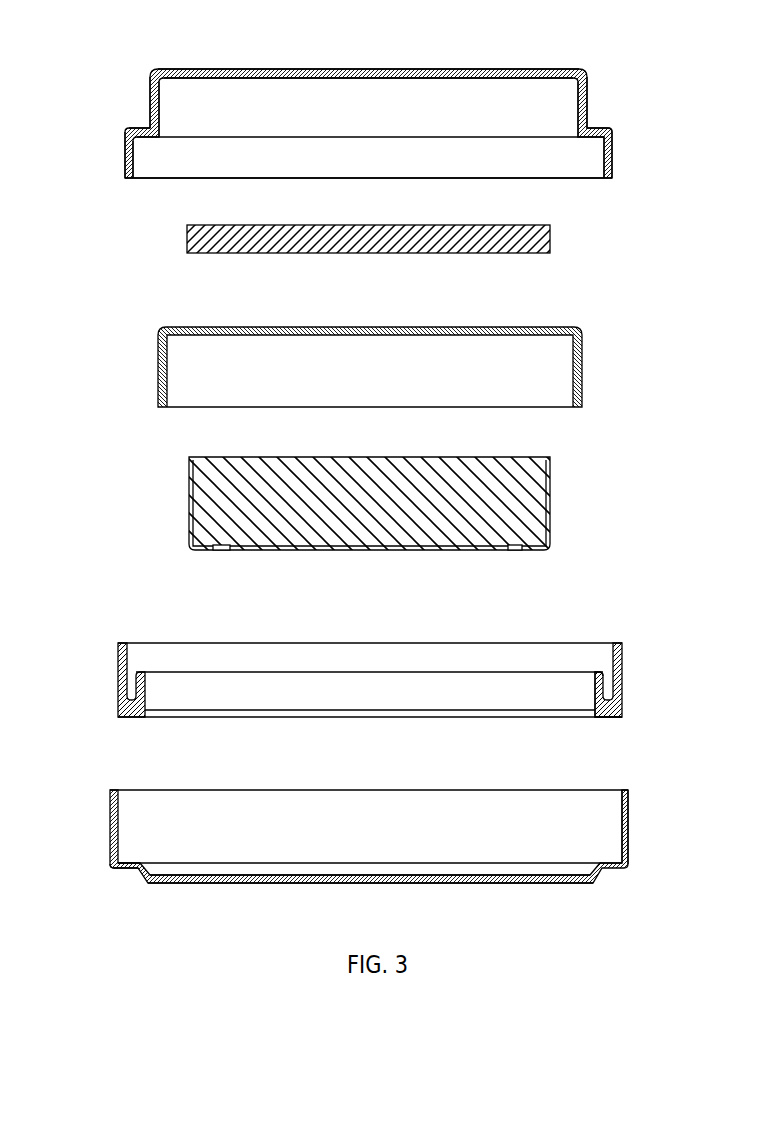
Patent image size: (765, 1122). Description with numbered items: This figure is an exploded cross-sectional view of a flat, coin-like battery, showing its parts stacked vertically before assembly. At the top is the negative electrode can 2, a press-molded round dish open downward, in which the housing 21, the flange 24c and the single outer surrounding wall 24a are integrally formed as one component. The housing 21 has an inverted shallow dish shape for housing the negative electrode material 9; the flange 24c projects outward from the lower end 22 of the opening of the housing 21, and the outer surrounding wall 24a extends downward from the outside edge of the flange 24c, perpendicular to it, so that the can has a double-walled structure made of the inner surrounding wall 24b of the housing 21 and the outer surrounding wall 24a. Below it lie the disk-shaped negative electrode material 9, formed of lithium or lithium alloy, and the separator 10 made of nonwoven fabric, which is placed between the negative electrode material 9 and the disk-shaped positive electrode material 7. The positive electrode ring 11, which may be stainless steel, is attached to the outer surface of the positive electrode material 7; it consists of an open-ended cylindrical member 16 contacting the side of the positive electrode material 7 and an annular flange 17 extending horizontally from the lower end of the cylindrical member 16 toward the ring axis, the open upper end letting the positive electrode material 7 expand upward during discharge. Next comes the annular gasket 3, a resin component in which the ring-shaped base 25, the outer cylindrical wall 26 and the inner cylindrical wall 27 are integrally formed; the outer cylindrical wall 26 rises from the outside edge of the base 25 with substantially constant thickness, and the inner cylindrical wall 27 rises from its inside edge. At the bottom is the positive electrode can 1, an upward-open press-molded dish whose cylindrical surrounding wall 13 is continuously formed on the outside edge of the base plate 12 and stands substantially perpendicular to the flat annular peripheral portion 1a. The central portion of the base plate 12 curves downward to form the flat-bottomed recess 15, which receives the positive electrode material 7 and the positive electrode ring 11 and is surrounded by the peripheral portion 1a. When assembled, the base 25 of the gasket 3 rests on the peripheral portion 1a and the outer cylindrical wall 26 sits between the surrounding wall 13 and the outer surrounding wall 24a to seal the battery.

The positive electrode can 1 is at (375, 838).
The peripheral portion 1a is at (128, 862).
The negative electrode can 2 is at (348, 102).
The gasket 3 is at (393, 680).
The positive electrode material 7 is at (362, 526).
The negative electrode material 9 is at (550, 236).
The separator 10 is at (538, 327).
The positive electrode ring 11 is at (186, 506).
The base plate 12 is at (356, 884).
The surrounding wall 13 is at (630, 822).
The recess 15 is at (467, 875).
The cylindrical member 16 is at (550, 497).
The annular flange 17 is at (522, 553).
The housing 21 is at (321, 69).
The lower end 22 is at (588, 130).
The outer surrounding wall 24a is at (125, 157).
The inner surrounding wall 24b is at (150, 102).
The flange 24c is at (142, 128).
The base 25 is at (607, 712).
The outer cylindrical wall 26 is at (617, 676).
The inner cylindrical wall 27 is at (601, 688).